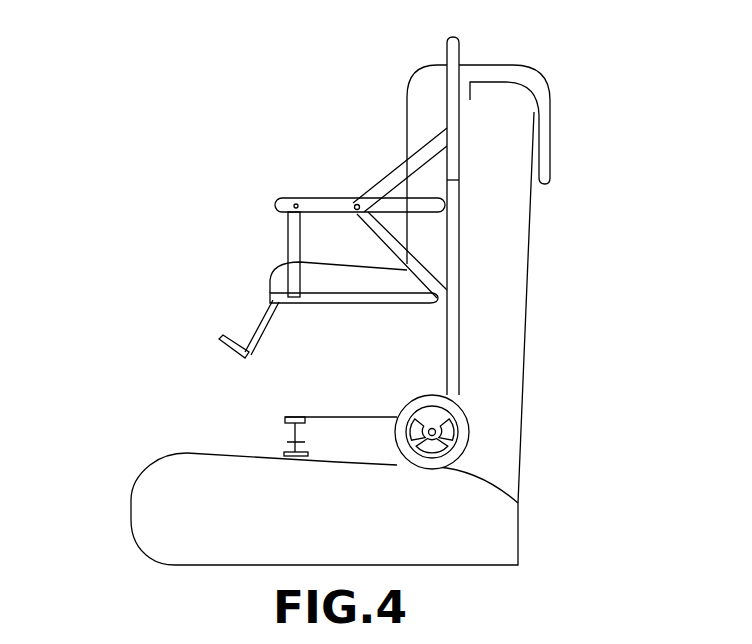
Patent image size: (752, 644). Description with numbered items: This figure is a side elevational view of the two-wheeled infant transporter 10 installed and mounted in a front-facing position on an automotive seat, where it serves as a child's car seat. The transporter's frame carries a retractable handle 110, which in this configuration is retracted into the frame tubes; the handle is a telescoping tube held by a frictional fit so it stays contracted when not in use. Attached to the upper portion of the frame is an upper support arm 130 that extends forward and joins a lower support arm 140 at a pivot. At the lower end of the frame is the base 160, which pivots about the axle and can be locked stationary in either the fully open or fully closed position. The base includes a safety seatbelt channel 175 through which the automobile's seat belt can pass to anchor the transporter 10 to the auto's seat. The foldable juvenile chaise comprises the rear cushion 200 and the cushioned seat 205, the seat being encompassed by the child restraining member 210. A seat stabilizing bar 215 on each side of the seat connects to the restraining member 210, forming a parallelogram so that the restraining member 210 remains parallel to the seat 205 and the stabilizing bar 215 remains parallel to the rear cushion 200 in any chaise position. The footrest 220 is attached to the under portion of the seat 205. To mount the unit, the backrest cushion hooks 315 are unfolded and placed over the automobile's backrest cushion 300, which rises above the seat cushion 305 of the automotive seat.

The infant transporter 10 is at (143, 163).
The retractable handle 110 is at (462, 43).
The upper support arm 130 is at (378, 185).
The lower support arm 140 is at (407, 273).
The base 160 is at (285, 417).
The safety seatbelt channel 175 is at (293, 442).
The rear cushion 200 is at (415, 90).
The cushioned seat 205 is at (357, 270).
The child restraining member 210 is at (303, 198).
The seat stabilizing bar 215 is at (288, 229).
The footrest 220 is at (223, 348).
The backrest cushion 300 is at (515, 354).
The base 305 is at (345, 539).
The backrest cushion hook 315 is at (528, 83).